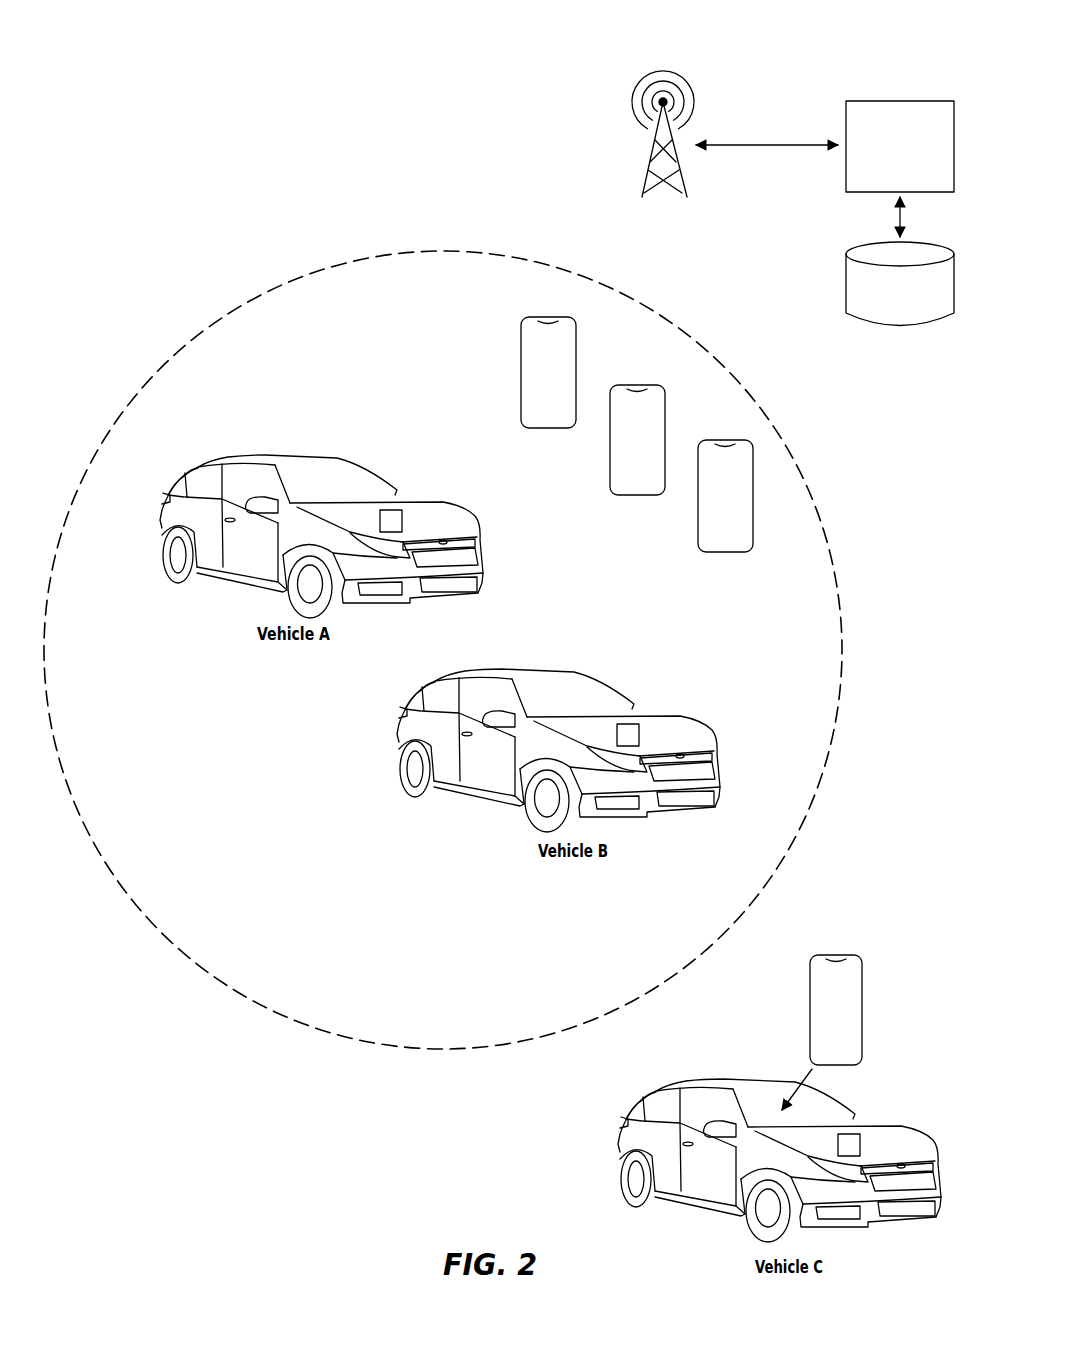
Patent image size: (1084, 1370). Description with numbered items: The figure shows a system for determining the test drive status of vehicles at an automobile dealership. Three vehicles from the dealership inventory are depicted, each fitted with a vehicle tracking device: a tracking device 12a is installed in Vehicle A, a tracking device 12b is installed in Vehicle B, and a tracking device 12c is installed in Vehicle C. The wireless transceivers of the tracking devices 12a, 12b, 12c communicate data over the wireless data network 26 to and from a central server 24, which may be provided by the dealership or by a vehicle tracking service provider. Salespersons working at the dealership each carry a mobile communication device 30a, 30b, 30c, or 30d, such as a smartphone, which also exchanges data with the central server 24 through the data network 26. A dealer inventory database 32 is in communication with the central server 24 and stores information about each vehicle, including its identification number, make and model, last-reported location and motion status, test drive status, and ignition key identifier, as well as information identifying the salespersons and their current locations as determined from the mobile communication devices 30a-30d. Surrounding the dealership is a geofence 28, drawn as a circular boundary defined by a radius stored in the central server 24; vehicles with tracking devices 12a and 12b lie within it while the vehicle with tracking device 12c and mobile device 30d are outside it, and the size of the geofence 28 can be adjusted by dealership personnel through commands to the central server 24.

The tracking device 12a is at (421, 505).
The tracking device 12b is at (657, 718).
The tracking device 12c is at (879, 1128).
The central server 24 is at (922, 98).
The wireless data network 26 is at (706, 79).
The geofence 28 is at (160, 367).
The mobile communication device 30a is at (548, 372).
The mobile communication device 30b is at (637, 440).
The mobile communication device 30c is at (725, 496).
The mobile communication device 30d is at (822, 1032).
The dealer inventory database 32 is at (937, 247).